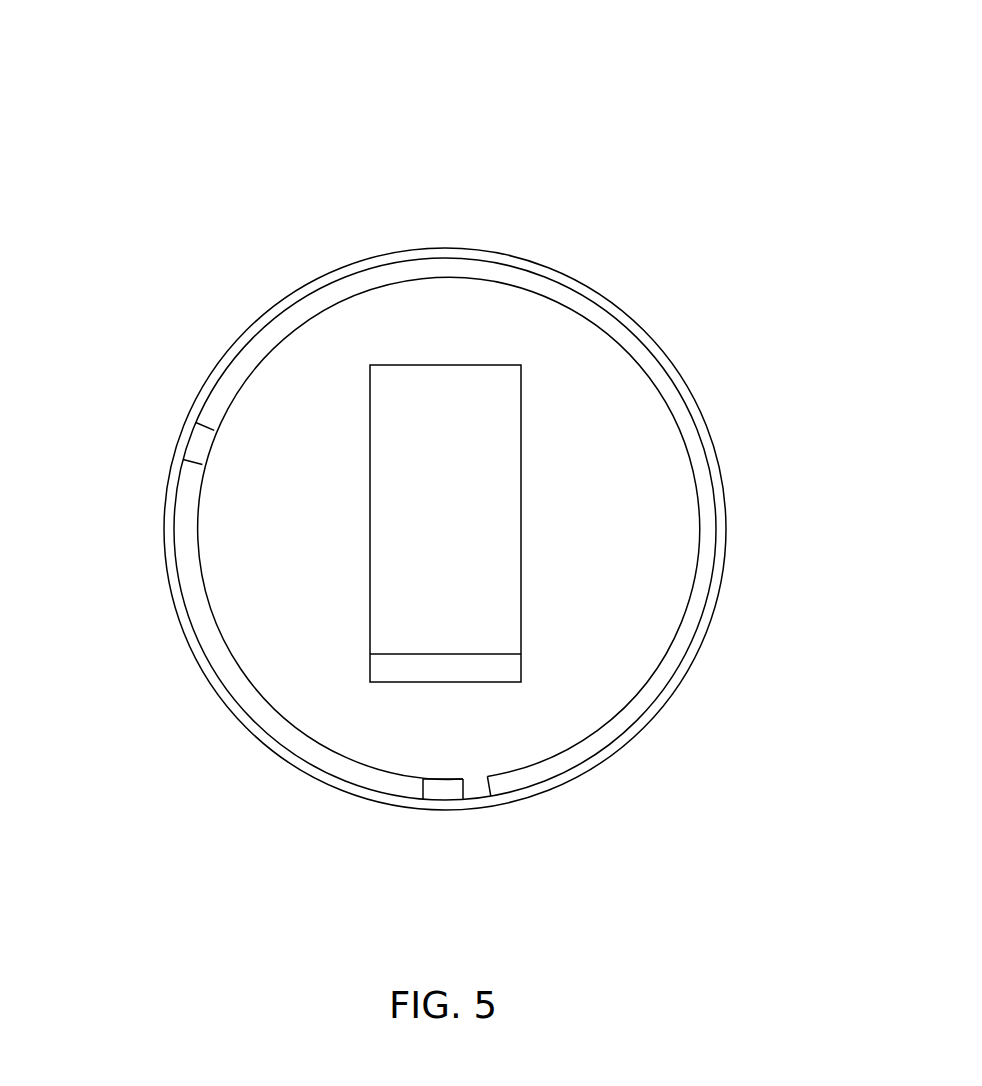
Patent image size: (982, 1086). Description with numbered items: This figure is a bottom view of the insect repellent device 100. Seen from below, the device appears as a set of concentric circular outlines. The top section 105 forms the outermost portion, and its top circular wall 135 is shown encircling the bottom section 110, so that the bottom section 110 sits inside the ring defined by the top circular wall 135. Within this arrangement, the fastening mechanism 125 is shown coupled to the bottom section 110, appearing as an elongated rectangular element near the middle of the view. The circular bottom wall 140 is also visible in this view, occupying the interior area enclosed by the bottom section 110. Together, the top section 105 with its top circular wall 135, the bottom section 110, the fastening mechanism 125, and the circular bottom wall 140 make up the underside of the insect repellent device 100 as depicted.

The insect repellent device 100 is at (543, 37).
The top section 105 is at (653, 335).
The bottom section 110 is at (603, 725).
The fastening mechanism 125 is at (459, 401).
The top circular wall 135 is at (223, 360).
The circular bottom wall 140 is at (273, 602).